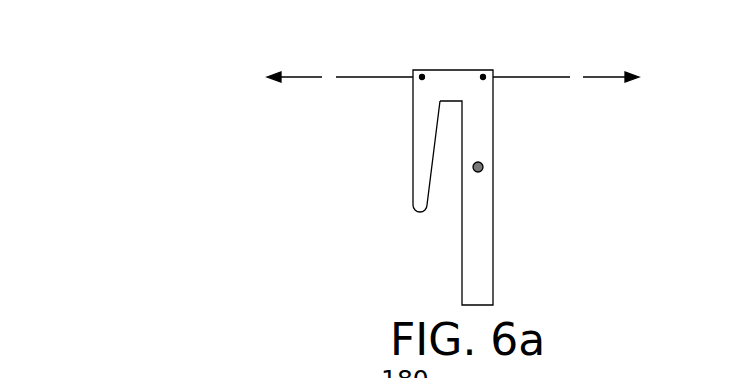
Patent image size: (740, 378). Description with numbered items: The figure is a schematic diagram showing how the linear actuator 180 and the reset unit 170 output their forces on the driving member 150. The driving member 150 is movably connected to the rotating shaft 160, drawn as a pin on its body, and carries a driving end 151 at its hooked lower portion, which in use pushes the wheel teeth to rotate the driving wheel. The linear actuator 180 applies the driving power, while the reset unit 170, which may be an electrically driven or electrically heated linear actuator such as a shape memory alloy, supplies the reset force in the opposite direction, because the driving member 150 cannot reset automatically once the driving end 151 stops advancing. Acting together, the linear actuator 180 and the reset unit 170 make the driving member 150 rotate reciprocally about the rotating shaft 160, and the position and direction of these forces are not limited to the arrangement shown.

The driving member 150 is at (473, 113).
The driving end 151 is at (422, 205).
The rotating shaft 160 is at (484, 167).
The reset unit 170 is at (555, 77).
The linear actuator 180 is at (348, 77).